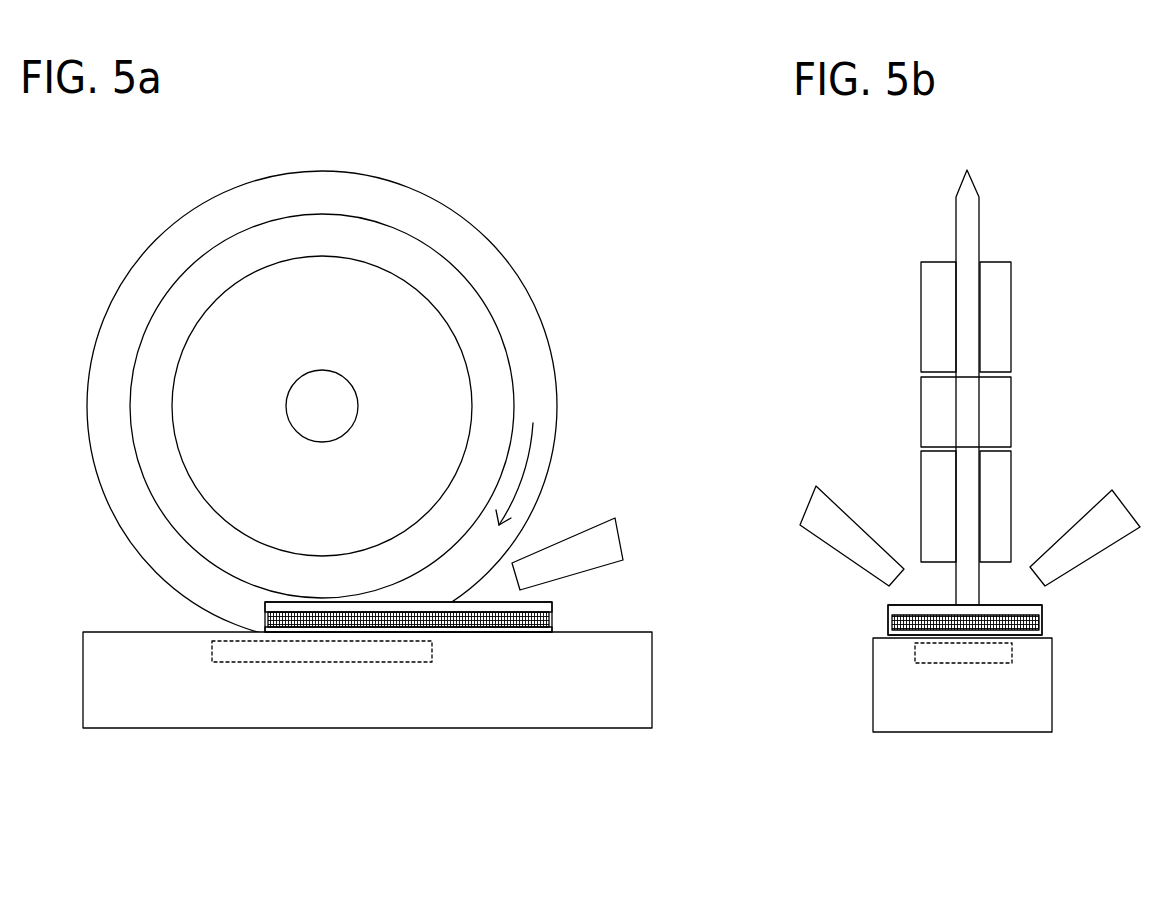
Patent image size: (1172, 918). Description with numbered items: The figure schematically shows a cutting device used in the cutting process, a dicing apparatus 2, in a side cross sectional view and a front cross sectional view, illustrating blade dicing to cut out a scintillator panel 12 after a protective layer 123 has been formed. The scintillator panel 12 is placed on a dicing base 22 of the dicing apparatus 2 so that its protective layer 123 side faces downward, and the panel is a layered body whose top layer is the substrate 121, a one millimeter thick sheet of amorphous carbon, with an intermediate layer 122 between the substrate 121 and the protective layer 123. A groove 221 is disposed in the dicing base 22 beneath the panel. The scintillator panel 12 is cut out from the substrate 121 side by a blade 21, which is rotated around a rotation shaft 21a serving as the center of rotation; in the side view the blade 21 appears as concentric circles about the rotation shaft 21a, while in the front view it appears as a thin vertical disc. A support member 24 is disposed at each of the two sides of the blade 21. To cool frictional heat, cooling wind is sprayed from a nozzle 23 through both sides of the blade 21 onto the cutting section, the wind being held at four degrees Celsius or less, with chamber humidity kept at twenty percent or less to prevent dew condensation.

In FIG. 5A, the dicing apparatus 2 is at (333, 138).
In FIG. 5A, the blade 21 is at (508, 292).
In FIG. 5B, the blade 21 is at (955, 190).
In FIG. 5A, the rotation shaft 21a is at (330, 408).
In FIG. 5B, the rotation shaft 21a is at (940, 412).
In FIG. 5A, the nozzle 23 is at (626, 546).
In FIG. 5B, the nozzle 23 is at (813, 515).
In FIG. 5B, the support member 24 is at (958, 248).
In FIG. 5A, the scintillator panel 12 is at (340, 593).
In FIG. 5B, the scintillator panel 12 is at (1047, 605).
In FIG. 5A, the substrate 121 is at (264, 607).
In FIG. 5A, the second layer 122 is at (264, 620).
In FIG. 5A, the protective layer 123 is at (264, 631).
In FIG. 5A, the dicing base 22 is at (243, 703).
In FIG. 5B, the dicing base 22 is at (920, 710).
In FIG. 5A, the groove 221 is at (342, 667).
In FIG. 5B, the groove 221 is at (983, 667).